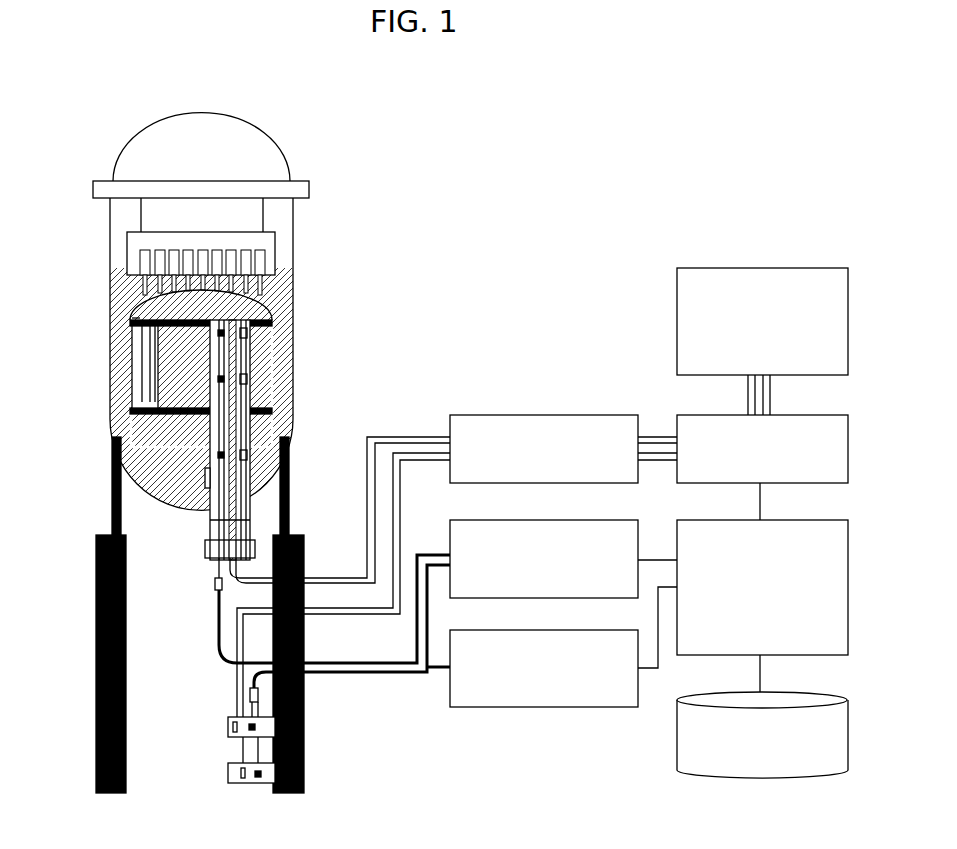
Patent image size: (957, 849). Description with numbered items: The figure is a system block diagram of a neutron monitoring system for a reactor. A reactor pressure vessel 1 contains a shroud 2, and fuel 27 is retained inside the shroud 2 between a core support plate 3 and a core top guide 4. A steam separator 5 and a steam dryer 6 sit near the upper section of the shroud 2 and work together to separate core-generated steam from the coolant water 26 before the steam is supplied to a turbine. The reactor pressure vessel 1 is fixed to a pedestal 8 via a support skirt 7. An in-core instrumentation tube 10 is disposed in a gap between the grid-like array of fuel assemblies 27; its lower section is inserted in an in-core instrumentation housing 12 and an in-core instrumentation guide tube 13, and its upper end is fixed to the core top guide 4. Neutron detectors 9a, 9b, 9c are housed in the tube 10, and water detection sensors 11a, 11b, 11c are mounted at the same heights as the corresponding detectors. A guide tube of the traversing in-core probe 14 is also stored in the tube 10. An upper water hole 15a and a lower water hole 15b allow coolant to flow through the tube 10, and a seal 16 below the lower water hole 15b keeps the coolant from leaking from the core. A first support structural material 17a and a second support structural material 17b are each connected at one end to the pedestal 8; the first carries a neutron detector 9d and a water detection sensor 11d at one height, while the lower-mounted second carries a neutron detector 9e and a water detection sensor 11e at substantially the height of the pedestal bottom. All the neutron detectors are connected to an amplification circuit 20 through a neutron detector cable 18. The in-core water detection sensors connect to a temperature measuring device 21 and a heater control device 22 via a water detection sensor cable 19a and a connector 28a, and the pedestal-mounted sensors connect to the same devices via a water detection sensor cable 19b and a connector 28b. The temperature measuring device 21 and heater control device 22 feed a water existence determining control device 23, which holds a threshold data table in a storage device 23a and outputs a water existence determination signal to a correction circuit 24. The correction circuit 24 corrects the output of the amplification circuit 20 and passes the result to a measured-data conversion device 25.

The reactor pressure vessel 1 is at (282, 156).
The shroud 2 is at (270, 294).
The core support plate 3 is at (265, 411).
The core top guide 4 is at (268, 322).
The steam separator 5 is at (262, 260).
The steam dryer 6 is at (268, 232).
The support skirt 7 is at (112, 506).
The pedestal 8 is at (96, 576).
The neutron detector 9a is at (247, 333).
The neutron detector 9b is at (247, 379).
The neutron detector 9c is at (247, 455).
The neutron detector 9d is at (233, 727).
The neutron detector 9e is at (241, 773).
The in-core instrumentation tube 10 is at (205, 385).
The water detection sensor 11a is at (218, 334).
The water detection sensor 11b is at (218, 380).
The water detection sensor 11c is at (218, 455).
The water detection sensor 11d is at (255, 727).
The water detection sensor 11e is at (261, 774).
The in-core instrumentation housing 12 is at (205, 548).
The in-core instrumentation guide tube 13 is at (250, 480).
The guide tube of the traversing in-core probe 14 is at (232, 356).
The upper water hole 15a is at (132, 319).
The lower water hole 15b is at (205, 480).
The seal 16 is at (250, 520).
The first support structural material 17a is at (228, 732).
The second support structural material 17b is at (228, 780).
The neutron detector cable 18 is at (375, 437).
The water detection sensor cable 19a is at (218, 640).
The water detection sensor cable 19b is at (402, 690).
The amplification circuit 20 is at (590, 415).
The temperature measuring device 21 is at (600, 520).
The heater control device 22 is at (600, 630).
The water existence determining control device 23 is at (815, 520).
The storage device 23a is at (805, 695).
The correction circuit 24 is at (815, 415).
The measured-data conversion device 25 is at (805, 268).
The coolant water 26 is at (262, 460).
The fuel 27 is at (145, 330).
The connector 28a is at (215, 584).
The connector 28b is at (250, 695).